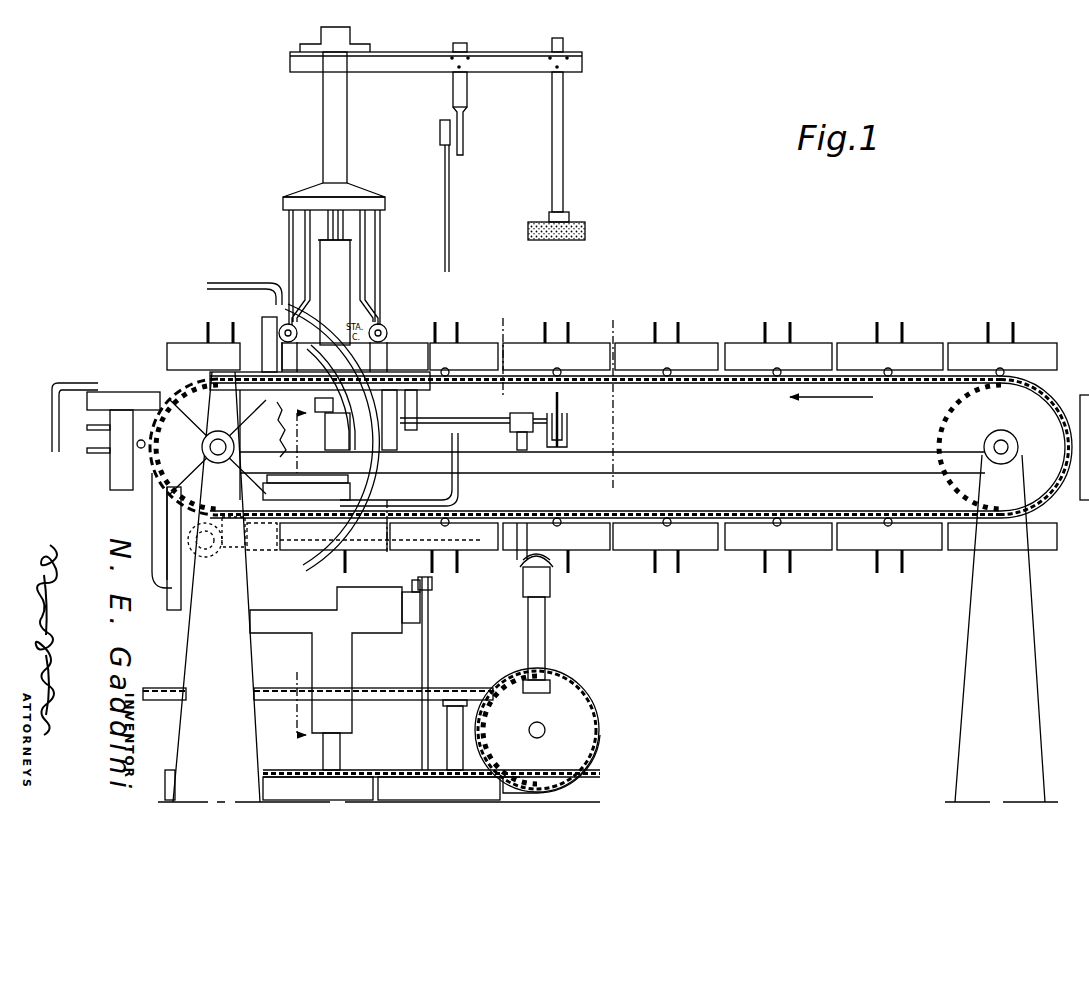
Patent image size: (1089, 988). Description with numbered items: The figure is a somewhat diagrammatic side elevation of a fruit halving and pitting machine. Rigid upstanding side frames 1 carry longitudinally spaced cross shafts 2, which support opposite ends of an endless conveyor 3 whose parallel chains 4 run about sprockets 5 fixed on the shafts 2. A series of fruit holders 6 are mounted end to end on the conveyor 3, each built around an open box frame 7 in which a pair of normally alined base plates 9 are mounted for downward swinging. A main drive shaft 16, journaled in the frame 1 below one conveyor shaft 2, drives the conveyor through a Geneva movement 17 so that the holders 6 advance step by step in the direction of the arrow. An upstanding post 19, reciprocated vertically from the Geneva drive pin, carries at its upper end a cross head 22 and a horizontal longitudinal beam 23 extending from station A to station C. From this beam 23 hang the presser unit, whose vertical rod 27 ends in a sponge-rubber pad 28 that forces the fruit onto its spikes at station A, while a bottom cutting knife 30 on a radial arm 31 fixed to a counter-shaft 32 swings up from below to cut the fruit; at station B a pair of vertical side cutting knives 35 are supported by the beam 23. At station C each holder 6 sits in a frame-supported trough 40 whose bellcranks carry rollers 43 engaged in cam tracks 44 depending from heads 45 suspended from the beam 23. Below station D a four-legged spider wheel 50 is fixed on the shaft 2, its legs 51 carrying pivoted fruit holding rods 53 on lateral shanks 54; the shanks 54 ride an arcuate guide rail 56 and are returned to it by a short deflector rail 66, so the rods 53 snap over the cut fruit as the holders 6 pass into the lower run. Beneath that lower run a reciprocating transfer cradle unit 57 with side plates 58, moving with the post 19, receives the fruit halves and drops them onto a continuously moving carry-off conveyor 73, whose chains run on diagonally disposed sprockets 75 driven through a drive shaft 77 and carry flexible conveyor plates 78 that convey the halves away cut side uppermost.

The side frames 1 is at (997, 513).
The cross shafts 2 is at (220, 450).
The endless conveyor 3 is at (740, 387).
The chains 4 is at (613, 95).
The sprockets 5 is at (177, 415).
The fruit holders 6 is at (168, 353).
The box frame 7 is at (503, 105).
The base plates 9 is at (390, 162).
The main drive shaft 16 is at (202, 553).
The Geneva movement 17 is at (301, 578).
The upstanding post 19 is at (335, 402).
The cross head 22 is at (318, 33).
The longitudinal beam 23 is at (428, 62).
The vertical rod 27 is at (560, 148).
The pad 28 is at (545, 240).
The bottom cutting knife 30 is at (562, 400).
The radial arm 31 is at (567, 438).
The counter-shaft 32 is at (435, 422).
The knives 35 is at (450, 197).
The trough 40 is at (428, 340).
The roller 43 is at (387, 323).
The cam tracks 44 is at (378, 292).
The heads 45 is at (322, 195).
The spider wheel 50 is at (197, 470).
The legs 51 is at (157, 520).
The fruit holding rods 53 is at (210, 282).
The lateral shanks 54 is at (407, 502).
The arcuate guide rail 56 is at (372, 403).
The transfer cradle unit 57 is at (280, 633).
The side plates 58 is at (390, 613).
The deflector rail 66 is at (320, 340).
The carry-off conveyor 73 is at (455, 685).
The sprockets 75 is at (563, 720).
The drive shaft 77 is at (542, 638).
The conveyor plates 78 is at (583, 772).